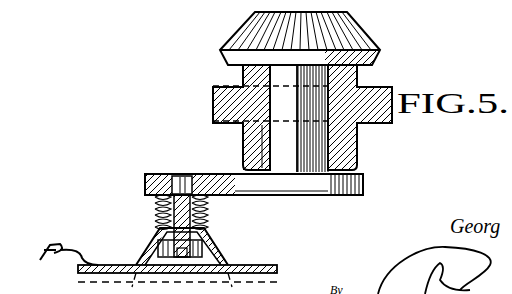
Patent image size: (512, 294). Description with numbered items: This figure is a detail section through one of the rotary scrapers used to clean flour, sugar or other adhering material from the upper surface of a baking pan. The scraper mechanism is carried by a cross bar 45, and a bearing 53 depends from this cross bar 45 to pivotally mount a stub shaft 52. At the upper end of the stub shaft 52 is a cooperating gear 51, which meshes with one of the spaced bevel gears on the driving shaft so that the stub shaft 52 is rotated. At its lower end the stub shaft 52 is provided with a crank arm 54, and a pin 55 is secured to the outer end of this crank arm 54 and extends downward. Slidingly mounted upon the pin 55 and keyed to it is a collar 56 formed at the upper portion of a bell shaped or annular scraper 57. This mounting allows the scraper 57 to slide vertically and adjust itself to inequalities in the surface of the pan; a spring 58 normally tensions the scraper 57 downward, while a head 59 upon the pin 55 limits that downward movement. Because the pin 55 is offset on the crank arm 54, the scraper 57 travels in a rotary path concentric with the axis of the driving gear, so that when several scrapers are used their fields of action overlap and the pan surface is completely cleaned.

The cross bar 45 is at (215, 95).
The cooperating gear 51 is at (348, 30).
The stub shaft 52 is at (300, 153).
The bearing 53 is at (256, 140).
The crank arm 54 is at (300, 194).
The pin 55 is at (183, 178).
The collar 56 is at (157, 208).
The bell shaped or annular scraper 57 is at (222, 266).
The spring 58 is at (205, 213).
The head 59 is at (217, 246).